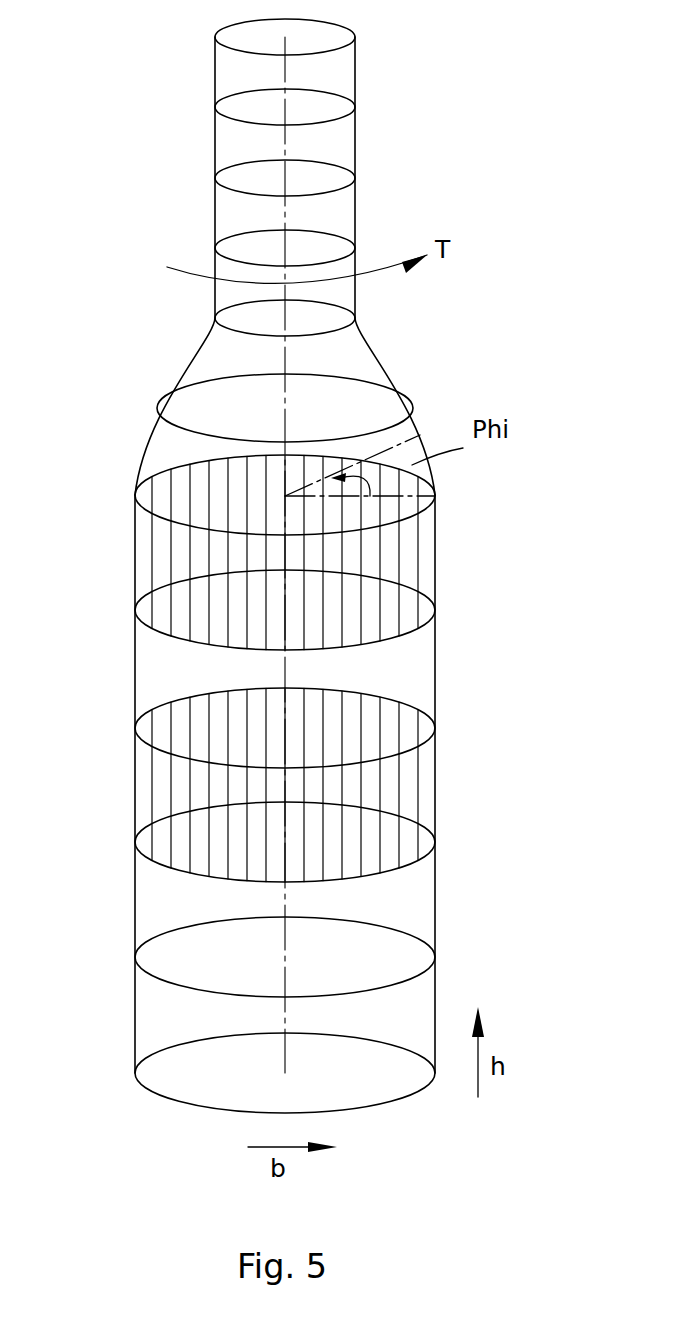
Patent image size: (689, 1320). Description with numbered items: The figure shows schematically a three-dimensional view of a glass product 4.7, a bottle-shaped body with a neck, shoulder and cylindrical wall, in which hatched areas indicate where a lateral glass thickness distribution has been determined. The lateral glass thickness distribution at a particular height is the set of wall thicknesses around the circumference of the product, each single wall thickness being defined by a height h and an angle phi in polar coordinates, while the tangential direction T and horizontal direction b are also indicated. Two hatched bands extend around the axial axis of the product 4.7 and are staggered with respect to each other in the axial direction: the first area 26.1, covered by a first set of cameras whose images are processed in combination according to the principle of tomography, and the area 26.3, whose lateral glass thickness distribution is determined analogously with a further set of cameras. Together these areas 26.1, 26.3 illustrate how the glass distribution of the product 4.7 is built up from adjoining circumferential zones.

The glass product 4.7 is at (158, 1022).
The area 26.3 is at (418, 555).
The first area 26.1 is at (415, 787).